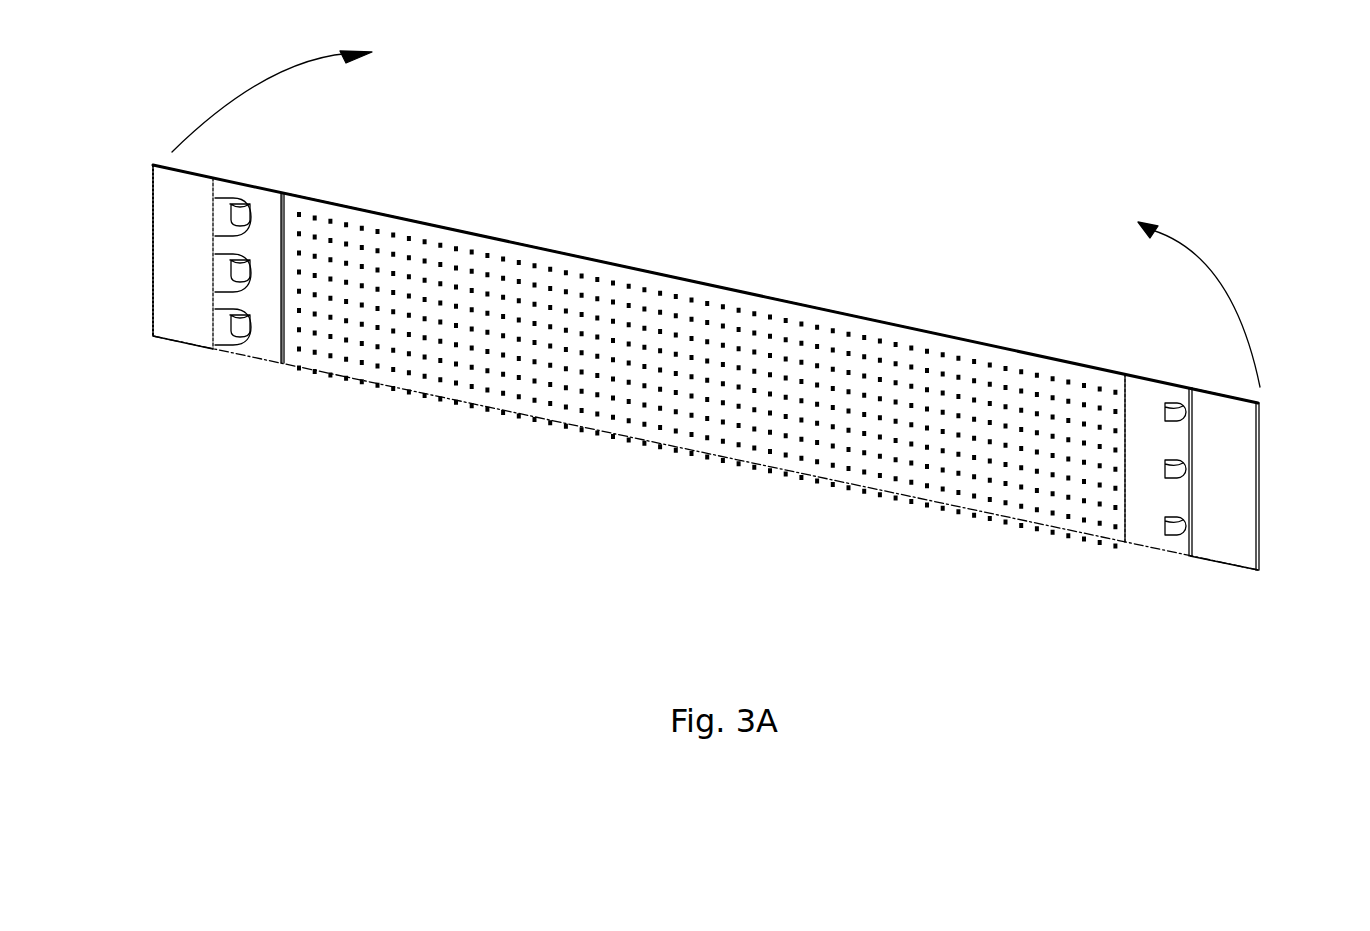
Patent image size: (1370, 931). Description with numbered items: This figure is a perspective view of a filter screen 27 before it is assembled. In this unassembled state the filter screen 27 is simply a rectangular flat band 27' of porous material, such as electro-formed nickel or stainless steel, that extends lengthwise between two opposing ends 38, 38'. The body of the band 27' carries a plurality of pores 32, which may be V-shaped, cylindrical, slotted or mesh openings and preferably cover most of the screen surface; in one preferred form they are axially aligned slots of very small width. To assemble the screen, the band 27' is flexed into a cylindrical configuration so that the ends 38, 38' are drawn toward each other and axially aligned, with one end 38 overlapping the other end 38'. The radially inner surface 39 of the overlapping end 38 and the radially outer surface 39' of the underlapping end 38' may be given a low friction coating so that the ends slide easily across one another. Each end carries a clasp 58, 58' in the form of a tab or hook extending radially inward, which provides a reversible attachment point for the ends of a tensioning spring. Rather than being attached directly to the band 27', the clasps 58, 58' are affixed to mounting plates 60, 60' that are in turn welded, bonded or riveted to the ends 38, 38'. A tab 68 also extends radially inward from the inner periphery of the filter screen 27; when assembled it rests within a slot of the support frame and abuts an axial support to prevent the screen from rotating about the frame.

The filter screen 27 is at (705, 367).
The band 27' is at (705, 283).
The pores 32 is at (862, 453).
The end 38 is at (218, 312).
The end 38' is at (1192, 517).
The radially inner surface 39 is at (147, 257).
The radially outer surface 39' is at (1272, 502).
The clasp 58 is at (175, 270).
The clasp 58' is at (1254, 475).
The mounting plate 60 is at (306, 249).
The mounting plate 60' is at (1095, 418).
The tab 68 is at (212, 246).